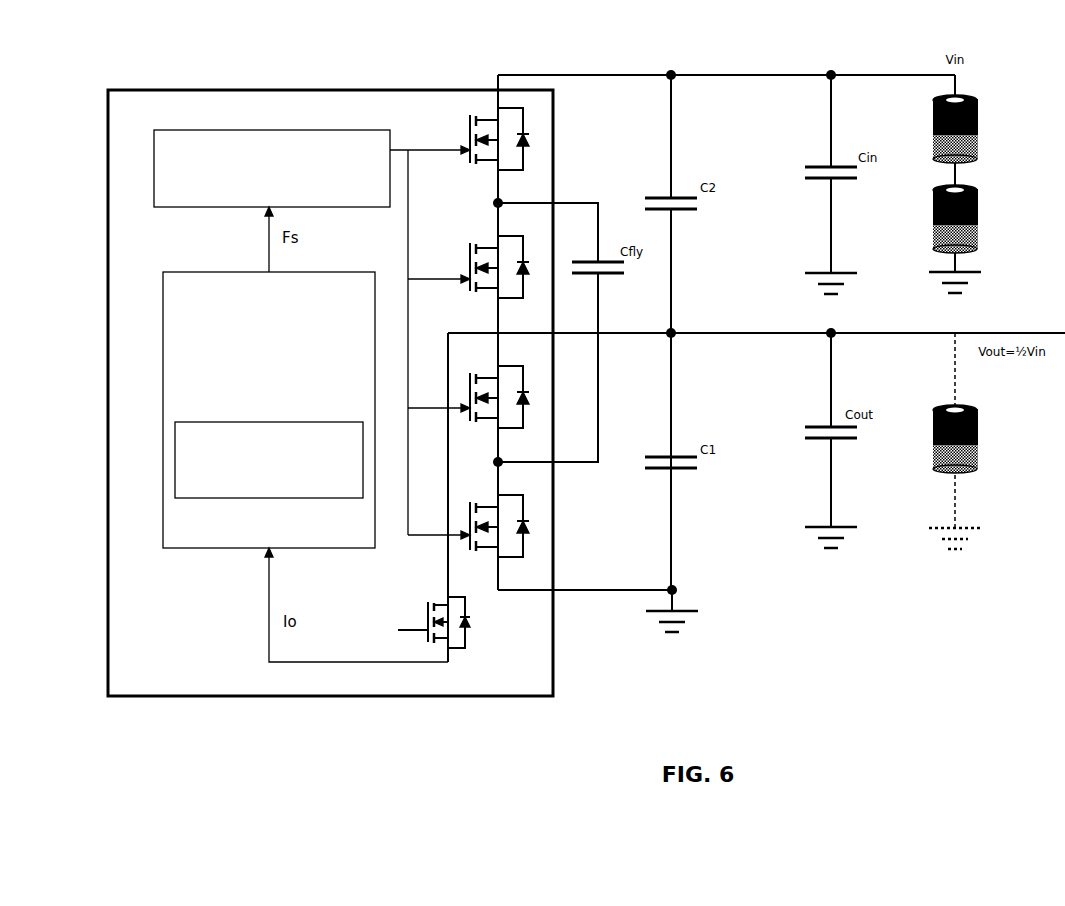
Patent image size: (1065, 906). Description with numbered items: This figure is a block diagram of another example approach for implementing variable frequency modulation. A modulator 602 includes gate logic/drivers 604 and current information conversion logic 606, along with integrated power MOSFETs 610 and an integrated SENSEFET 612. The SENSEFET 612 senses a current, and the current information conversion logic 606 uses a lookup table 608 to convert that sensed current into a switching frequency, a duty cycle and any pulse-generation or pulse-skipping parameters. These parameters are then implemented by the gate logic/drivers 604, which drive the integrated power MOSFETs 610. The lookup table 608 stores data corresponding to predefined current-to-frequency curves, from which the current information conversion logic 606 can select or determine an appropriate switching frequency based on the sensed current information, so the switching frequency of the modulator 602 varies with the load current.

The modulator 602 is at (330, 393).
The gate logic/drivers 604 is at (272, 168).
The current information conversion logic 606 is at (269, 410).
The lookup table 608 is at (269, 460).
The integrated power MOSFETs 610 is at (483, 170).
The integrated SENSEFET 612 is at (420, 612).